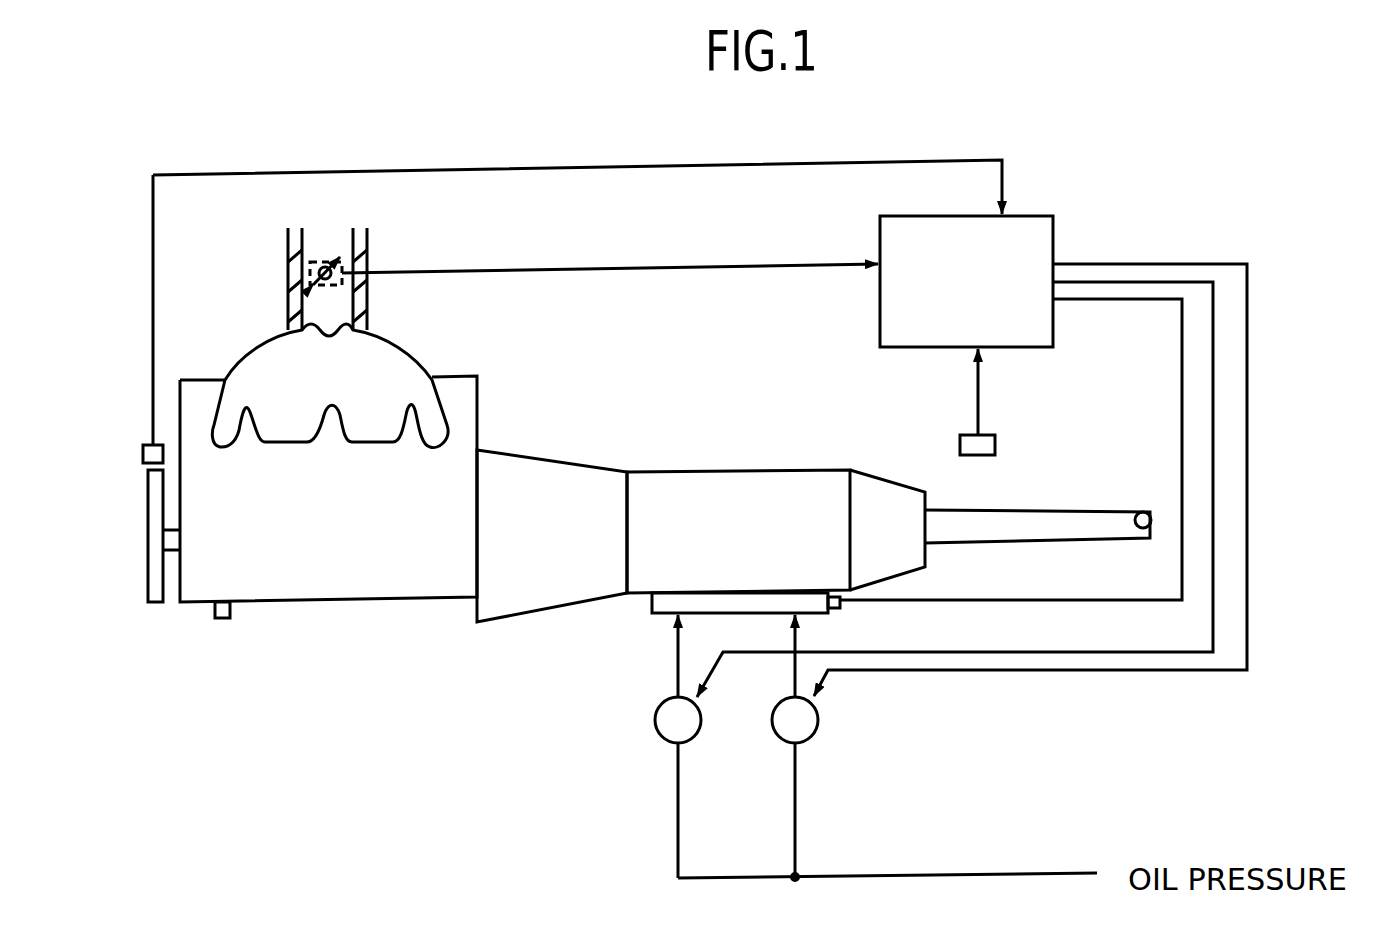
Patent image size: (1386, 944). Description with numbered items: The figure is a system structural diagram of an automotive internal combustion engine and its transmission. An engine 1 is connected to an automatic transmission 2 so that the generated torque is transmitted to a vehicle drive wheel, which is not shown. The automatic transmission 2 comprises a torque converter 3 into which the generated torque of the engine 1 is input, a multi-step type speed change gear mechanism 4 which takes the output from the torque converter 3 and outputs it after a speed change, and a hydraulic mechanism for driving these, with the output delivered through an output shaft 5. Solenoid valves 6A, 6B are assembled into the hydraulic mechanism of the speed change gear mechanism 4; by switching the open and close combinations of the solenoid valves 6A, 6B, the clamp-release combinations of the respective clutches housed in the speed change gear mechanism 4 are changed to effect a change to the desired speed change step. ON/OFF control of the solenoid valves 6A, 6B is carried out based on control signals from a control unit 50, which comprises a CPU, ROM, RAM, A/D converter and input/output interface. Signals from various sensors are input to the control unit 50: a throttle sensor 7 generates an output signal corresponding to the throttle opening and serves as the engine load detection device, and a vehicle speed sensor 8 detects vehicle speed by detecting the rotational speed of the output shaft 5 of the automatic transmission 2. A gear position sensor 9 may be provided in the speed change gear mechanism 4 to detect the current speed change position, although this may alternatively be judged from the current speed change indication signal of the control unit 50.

The engine 1 is at (453, 371).
The automatic transmission 2 is at (701, 477).
The torque converter 3 is at (562, 560).
The speed change gear mechanism 4 is at (762, 557).
The output shaft 5 is at (977, 543).
The solenoid valve 6A is at (657, 730).
The solenoid valve 6B is at (818, 735).
The throttle sensor 7 is at (325, 258).
The vehicle speed sensor 8 is at (995, 445).
The gear position sensor 9 is at (840, 603).
The control unit 50 is at (1033, 216).